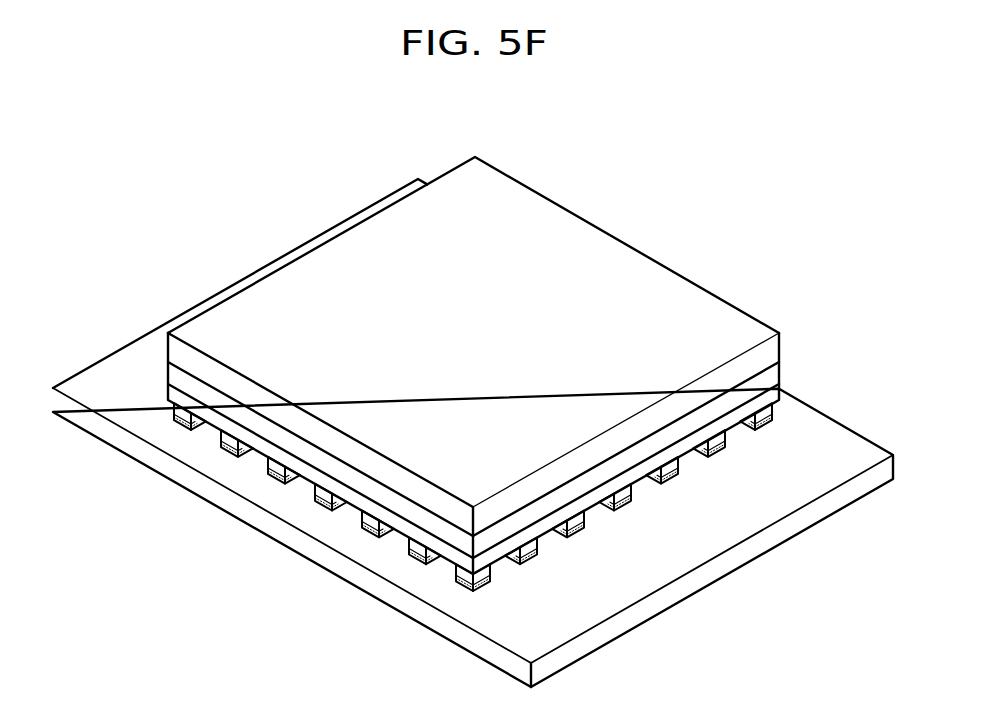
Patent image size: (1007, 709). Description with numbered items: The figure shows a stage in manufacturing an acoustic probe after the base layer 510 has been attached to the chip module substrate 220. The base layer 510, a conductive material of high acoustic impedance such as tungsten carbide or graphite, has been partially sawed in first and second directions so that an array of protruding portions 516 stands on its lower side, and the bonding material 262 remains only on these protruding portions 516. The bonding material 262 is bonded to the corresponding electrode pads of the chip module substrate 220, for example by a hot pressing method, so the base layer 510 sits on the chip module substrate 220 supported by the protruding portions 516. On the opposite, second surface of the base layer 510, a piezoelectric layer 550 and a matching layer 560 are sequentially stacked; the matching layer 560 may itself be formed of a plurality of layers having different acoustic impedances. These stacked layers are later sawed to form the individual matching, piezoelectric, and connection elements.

The chip module substrate 220 is at (510, 661).
The matching layer 560 is at (767, 358).
The piezoelectric layer 550 is at (772, 377).
The base layer 510 is at (775, 393).
The protruding portions 516 is at (770, 410).
The bonding material 262 is at (766, 424).